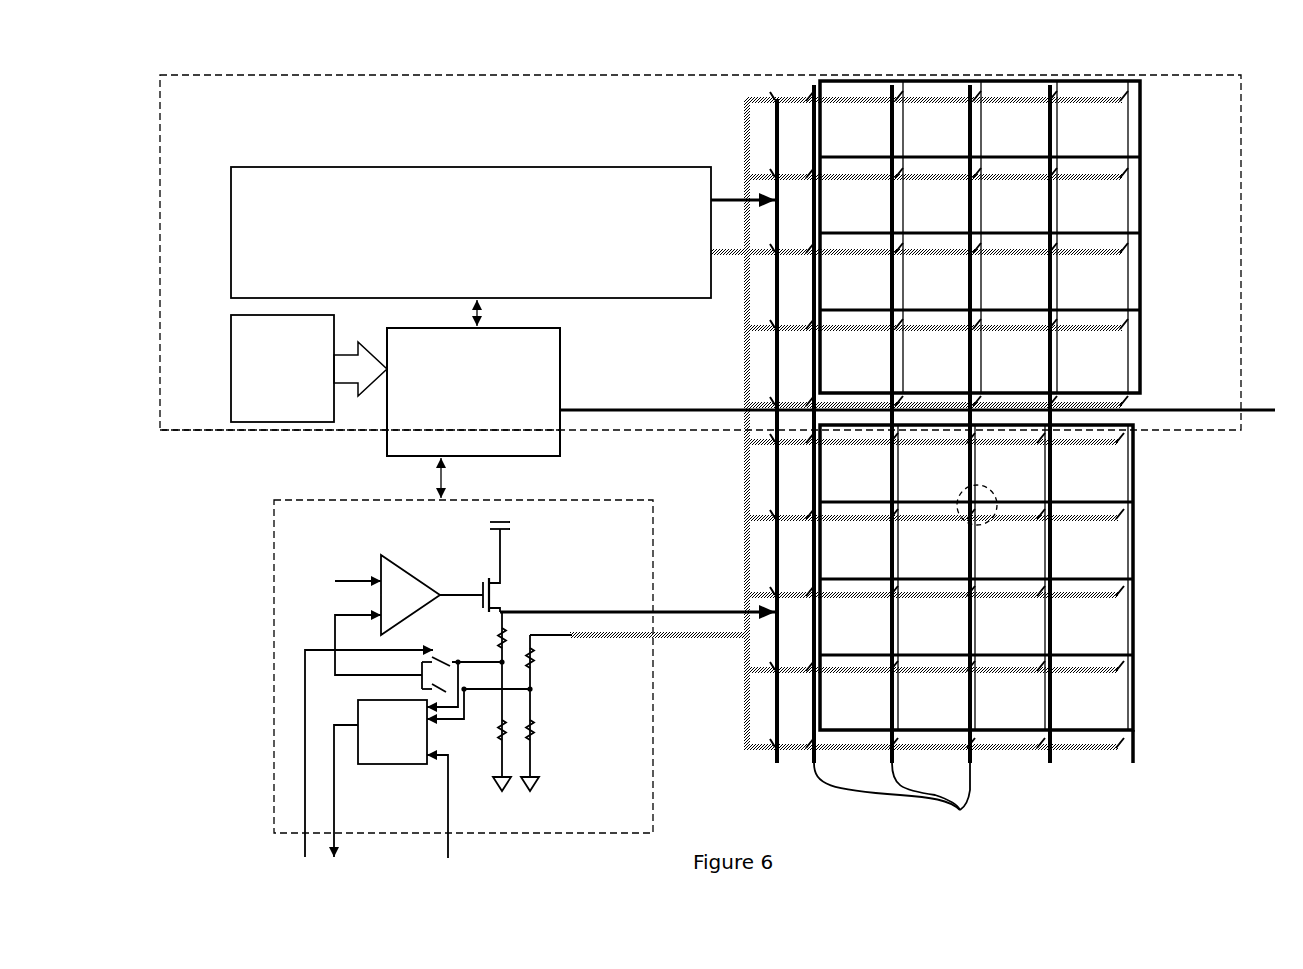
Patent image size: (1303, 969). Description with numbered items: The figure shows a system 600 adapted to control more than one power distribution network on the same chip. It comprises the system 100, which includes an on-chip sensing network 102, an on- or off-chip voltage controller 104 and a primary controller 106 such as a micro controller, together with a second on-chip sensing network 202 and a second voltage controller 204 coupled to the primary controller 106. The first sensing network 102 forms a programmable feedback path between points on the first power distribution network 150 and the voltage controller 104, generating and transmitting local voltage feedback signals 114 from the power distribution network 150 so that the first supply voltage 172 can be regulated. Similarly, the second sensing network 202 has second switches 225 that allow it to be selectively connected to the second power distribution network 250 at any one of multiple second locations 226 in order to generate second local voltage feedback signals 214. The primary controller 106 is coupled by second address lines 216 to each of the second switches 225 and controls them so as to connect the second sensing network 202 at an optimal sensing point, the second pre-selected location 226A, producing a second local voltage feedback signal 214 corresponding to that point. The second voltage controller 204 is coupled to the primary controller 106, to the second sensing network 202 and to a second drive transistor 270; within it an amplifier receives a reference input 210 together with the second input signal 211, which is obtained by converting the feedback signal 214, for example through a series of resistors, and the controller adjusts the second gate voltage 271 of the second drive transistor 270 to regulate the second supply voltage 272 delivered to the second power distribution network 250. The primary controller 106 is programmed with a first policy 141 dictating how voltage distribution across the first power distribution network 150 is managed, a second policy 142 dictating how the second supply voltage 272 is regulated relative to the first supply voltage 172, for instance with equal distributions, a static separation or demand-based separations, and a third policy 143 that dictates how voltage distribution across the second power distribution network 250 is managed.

The system 600 is at (232, 65).
The system 100 is at (233, 435).
The on-chip sensing network 102 is at (744, 116).
The voltage controller 104 is at (474, 167).
The primary controller 106 is at (385, 433).
The local voltage feedback signals 114 is at (731, 256).
The first policy 141 is at (243, 344).
The second policy 142 is at (242, 364).
The third policy 143 is at (242, 385).
The power distribution network 150 is at (1143, 215).
The first supply voltage 172 is at (737, 198).
The second on-chip sensing network 202 is at (745, 730).
The second voltage controller 204 is at (274, 668).
The reference input 210 is at (347, 578).
The second input signal 211 is at (333, 617).
The second local voltage feedback signal 214 is at (611, 641).
The second address lines 216 is at (892, 801).
The second switches 225 is at (957, 523).
The second locations 226 is at (925, 490).
The second pre-selected location 226A is at (1006, 489).
The second power distribution network 250 is at (1137, 538).
The second drive transistor 270 is at (514, 576).
The second gate voltage 271 is at (461, 591).
The second supply voltage 272 is at (593, 608).